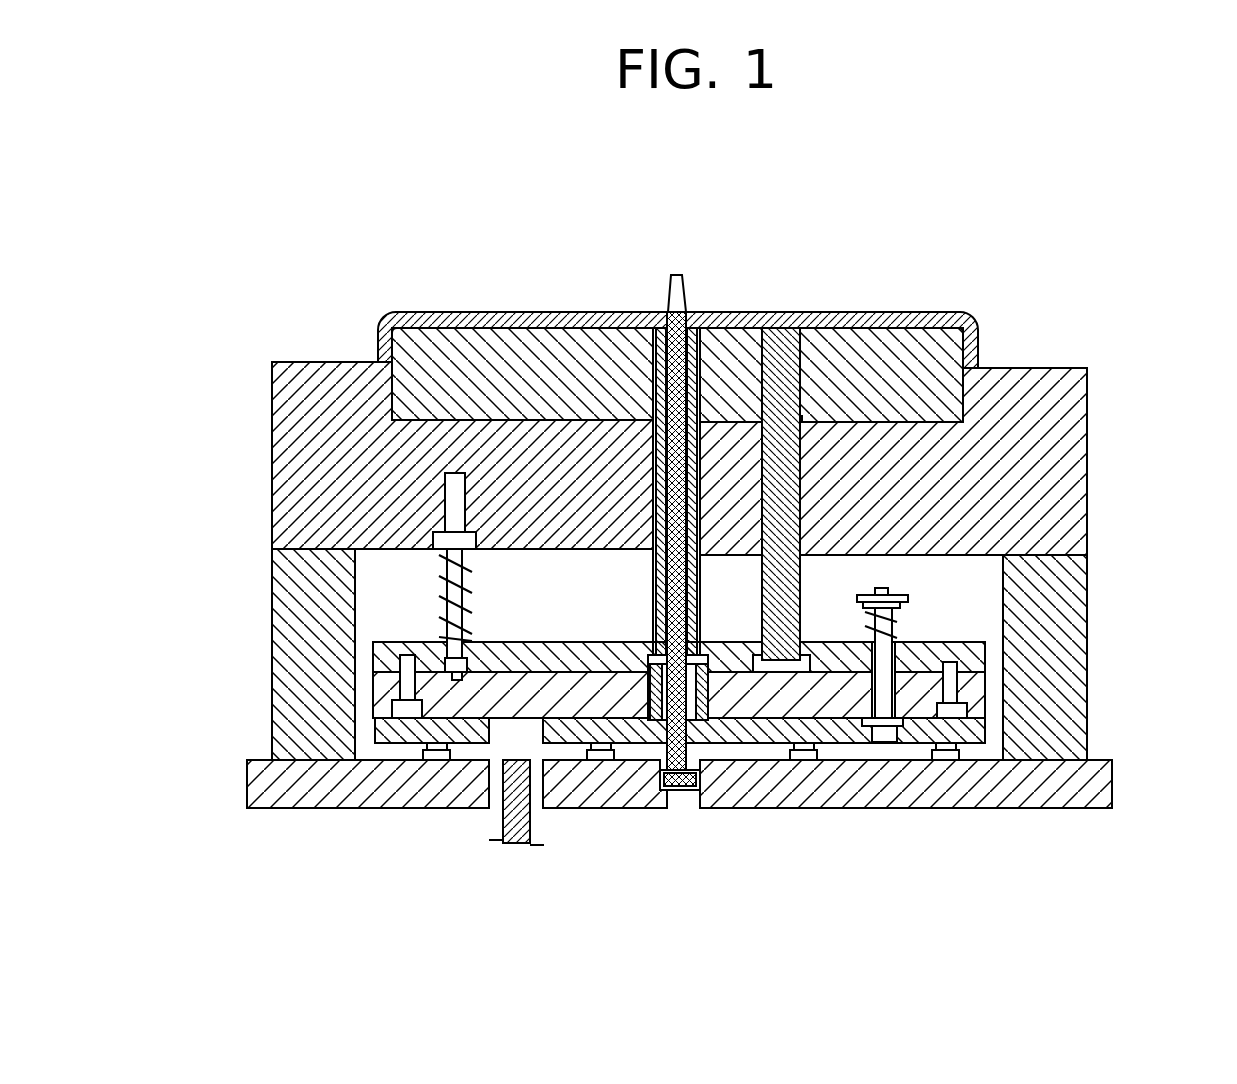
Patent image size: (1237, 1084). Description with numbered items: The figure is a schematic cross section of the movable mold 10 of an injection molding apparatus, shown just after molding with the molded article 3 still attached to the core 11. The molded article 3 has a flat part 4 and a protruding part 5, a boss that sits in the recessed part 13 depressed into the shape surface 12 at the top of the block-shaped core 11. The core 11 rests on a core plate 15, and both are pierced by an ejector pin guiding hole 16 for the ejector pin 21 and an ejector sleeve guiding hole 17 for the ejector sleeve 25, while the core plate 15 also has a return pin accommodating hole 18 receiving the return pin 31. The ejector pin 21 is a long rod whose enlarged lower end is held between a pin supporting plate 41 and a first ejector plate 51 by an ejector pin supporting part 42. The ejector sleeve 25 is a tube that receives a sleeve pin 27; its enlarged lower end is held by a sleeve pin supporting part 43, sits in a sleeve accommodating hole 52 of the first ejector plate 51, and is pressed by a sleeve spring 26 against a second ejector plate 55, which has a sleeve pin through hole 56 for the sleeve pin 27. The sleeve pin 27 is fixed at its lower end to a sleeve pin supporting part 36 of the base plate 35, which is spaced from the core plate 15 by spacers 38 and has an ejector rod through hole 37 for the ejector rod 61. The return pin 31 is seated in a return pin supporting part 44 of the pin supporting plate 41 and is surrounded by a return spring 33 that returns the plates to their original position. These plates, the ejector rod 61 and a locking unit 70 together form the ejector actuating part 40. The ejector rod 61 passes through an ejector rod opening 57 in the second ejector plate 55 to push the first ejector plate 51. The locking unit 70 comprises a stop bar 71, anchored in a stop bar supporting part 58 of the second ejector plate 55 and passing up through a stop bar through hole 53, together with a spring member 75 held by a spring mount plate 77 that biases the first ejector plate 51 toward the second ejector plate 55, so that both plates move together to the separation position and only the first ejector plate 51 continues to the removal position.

The movable mold 10 is at (303, 310).
The core 11 is at (778, 466).
The shape surface 12 is at (557, 312).
The recessed part 13 is at (615, 312).
The core plate 15 is at (272, 388).
The ejector pin guiding hole 16 is at (838, 312).
The ejector sleeve guiding hole 17 is at (524, 312).
The return pin accommodating hole 18 is at (443, 490).
The ejector pin 21 is at (800, 390).
The ejector sleeve 25 is at (802, 415).
The sleeve spring 26 is at (708, 641).
The sleeve pin 27 is at (700, 483).
The molded article 3 is at (916, 417).
The flat part 4 is at (757, 312).
The protruding part 5 is at (688, 312).
The return pin 31 is at (440, 578).
The return spring 33 is at (436, 537).
The base plate 35 is at (315, 808).
The sleeve pin supporting part 36 is at (683, 790).
The ejector rod through hole 37 is at (490, 805).
The spacers 38 is at (278, 724).
The ejector actuating part 40 is at (679, 817).
The pin supporting plate 41 is at (628, 706).
The ejector pin supporting part 42 is at (813, 643).
The sleeve pin supporting part 43 is at (650, 641).
The return pin supporting part 44 is at (373, 666).
The first ejector plate 51 is at (592, 706).
The sleeve accommodating hole 52 is at (752, 720).
The stop bar through hole 53 is at (843, 740).
The second ejector plate 55 is at (573, 762).
The sleeve pin through hole 56 is at (717, 720).
The ejector rod opening 57 is at (423, 808).
The stop bar supporting part 58 is at (882, 745).
The ejector rod 61 is at (516, 839).
The locking unit 70 is at (1037, 654).
The stop bar 71 is at (883, 695).
The spring member 75 is at (900, 620).
The spring mount plate 77 is at (897, 602).